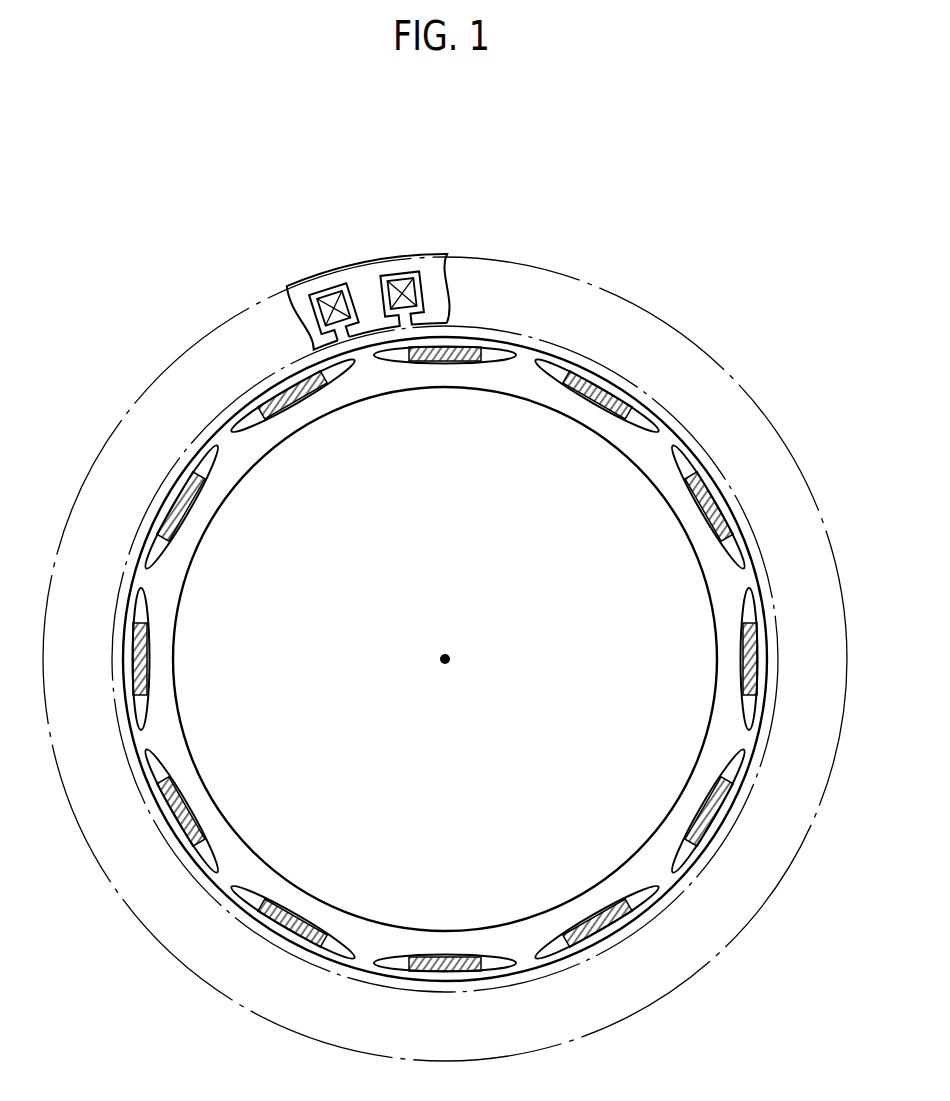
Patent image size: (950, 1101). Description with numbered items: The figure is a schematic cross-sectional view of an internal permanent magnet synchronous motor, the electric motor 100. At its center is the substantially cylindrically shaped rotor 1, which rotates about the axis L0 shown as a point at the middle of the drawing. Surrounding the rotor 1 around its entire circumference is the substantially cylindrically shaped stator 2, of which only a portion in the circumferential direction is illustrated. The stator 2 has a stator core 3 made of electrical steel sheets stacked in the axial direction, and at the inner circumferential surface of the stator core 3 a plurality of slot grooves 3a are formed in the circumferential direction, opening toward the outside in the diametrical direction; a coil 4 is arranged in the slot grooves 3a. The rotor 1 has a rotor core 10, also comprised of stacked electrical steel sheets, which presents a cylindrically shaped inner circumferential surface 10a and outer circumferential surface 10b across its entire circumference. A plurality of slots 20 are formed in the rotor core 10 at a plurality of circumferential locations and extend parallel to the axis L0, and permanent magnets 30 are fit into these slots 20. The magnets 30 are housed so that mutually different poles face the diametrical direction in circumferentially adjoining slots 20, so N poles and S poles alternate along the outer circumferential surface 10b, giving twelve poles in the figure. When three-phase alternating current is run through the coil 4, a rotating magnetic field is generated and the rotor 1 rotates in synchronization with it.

The electric motor 100 is at (672, 185).
The rotor 1 is at (385, 580).
The stator 2 is at (445, 561).
The stator core 3 is at (400, 265).
The slot grooves 3a is at (325, 292).
The coil 4 is at (313, 310).
The rotor core 10 is at (385, 580).
The inner circumferential surface 10a is at (253, 440).
The outer circumferential surface 10b is at (138, 552).
The slots 20 is at (247, 420).
The permanent magnets 30 is at (187, 487).
The axis L0 is at (450, 661).